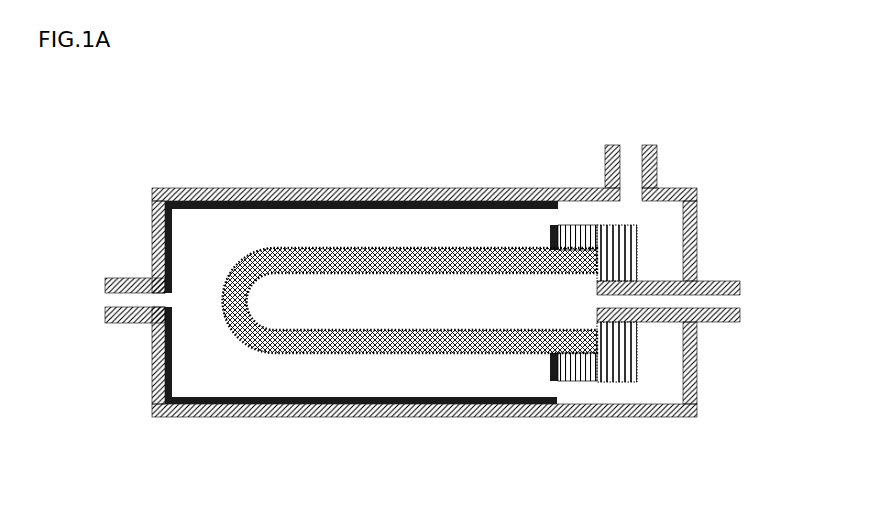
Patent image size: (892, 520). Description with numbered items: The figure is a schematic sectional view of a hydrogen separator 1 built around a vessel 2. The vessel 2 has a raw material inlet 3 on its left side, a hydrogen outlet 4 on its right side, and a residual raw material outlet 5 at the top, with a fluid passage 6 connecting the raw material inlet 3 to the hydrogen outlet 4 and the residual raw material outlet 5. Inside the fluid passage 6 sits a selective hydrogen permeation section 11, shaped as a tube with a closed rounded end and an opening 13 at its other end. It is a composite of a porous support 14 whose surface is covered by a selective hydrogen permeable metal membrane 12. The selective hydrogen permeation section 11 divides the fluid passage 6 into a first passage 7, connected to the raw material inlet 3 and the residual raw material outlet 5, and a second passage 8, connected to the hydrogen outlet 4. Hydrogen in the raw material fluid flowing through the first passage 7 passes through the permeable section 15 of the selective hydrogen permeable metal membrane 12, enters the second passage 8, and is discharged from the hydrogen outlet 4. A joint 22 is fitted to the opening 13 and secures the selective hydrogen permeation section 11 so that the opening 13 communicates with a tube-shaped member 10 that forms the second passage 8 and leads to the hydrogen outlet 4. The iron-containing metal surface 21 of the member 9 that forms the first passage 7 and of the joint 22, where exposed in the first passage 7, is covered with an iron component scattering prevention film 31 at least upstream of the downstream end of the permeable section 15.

The hydrogen separator 1 is at (422, 268).
The vessel 2 is at (699, 113).
The raw material inlet 3 is at (115, 300).
The hydrogen outlet 4 is at (728, 300).
The residual raw material outlet 5 is at (625, 150).
The fluid passage 6 is at (477, 257).
The first passage 7 is at (375, 233).
The second passage 8 is at (657, 303).
The member that forms the first passage 9 is at (210, 192).
The member that forms the second passage 10 is at (660, 313).
The selective hydrogen permeation section 11 is at (271, 356).
The selective hydrogen permeable metal membrane 12 is at (410, 368).
The opening 13 is at (593, 298).
The porous support 14 is at (447, 350).
The permeable section 15 is at (350, 350).
The iron-containing metal surface 21 is at (250, 196).
The joint 22 is at (589, 229).
The iron component scattering prevention film 31 is at (288, 200).